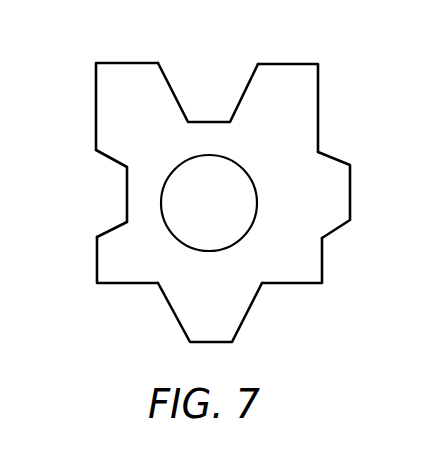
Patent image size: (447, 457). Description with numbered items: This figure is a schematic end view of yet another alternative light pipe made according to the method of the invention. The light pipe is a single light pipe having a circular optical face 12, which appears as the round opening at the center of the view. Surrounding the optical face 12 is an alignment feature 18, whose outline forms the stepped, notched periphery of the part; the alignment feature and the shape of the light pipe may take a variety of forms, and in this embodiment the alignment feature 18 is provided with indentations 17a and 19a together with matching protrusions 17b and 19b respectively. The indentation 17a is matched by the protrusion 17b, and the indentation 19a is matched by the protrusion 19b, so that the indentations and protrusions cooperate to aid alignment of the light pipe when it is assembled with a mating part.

The circular optical face 12 is at (258, 210).
The indentation 17a is at (211, 122).
The protrusion 17b is at (253, 302).
The alignment feature 18 is at (318, 101).
The indentation 19a is at (127, 193).
The protrusion 19b is at (350, 184).